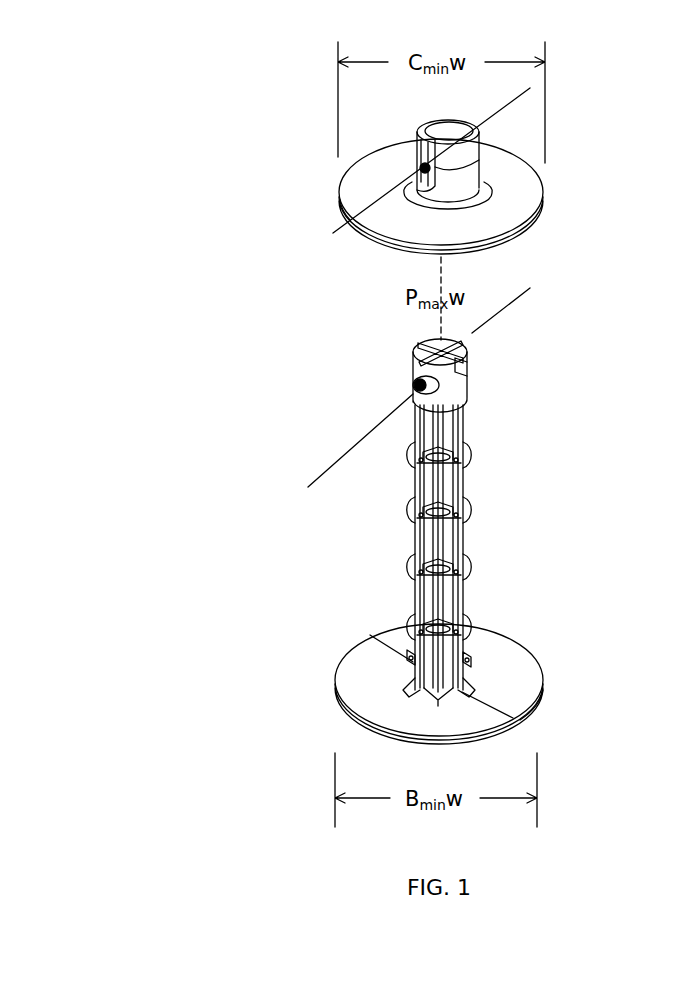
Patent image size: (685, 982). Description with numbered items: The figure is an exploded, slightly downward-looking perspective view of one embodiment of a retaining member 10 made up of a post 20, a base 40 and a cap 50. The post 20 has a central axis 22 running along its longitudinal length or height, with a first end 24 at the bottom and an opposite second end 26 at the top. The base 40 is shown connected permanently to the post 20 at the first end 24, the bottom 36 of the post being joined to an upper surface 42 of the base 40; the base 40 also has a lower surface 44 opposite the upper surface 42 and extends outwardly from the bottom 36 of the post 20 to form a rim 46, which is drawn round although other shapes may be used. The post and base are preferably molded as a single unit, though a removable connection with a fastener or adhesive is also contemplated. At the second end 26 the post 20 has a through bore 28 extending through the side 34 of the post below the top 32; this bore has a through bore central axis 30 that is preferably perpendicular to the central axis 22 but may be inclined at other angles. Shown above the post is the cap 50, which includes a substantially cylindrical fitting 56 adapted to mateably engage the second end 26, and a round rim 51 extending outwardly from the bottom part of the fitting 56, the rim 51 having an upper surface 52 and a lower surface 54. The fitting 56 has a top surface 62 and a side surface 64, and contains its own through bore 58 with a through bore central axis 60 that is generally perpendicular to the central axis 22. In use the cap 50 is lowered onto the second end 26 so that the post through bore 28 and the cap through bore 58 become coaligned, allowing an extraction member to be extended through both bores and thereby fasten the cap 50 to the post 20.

The retaining member 10 is at (200, 433).
The post 20 is at (413, 486).
The central axis 22 is at (448, 282).
The first end 24 is at (465, 652).
The second end 26 is at (480, 387).
The through bore 28 is at (413, 393).
The through bore central axis 30 is at (330, 454).
The top 32 is at (417, 342).
The side 34 is at (413, 555).
The bottom 36 is at (439, 684).
The base 40 is at (320, 678).
The upper surface 42 is at (350, 700).
The lower surface 44 is at (381, 745).
The rim 46 is at (548, 687).
The cap 50 is at (261, 158).
The rim 51 is at (338, 205).
The upper surface 52 is at (537, 205).
The lower surface 54 is at (505, 255).
The fitting 56 is at (470, 140).
The through bore 58 is at (434, 137).
The through bore central axis 60 is at (400, 175).
The top surface 62 is at (406, 158).
The side surface 64 is at (480, 162).